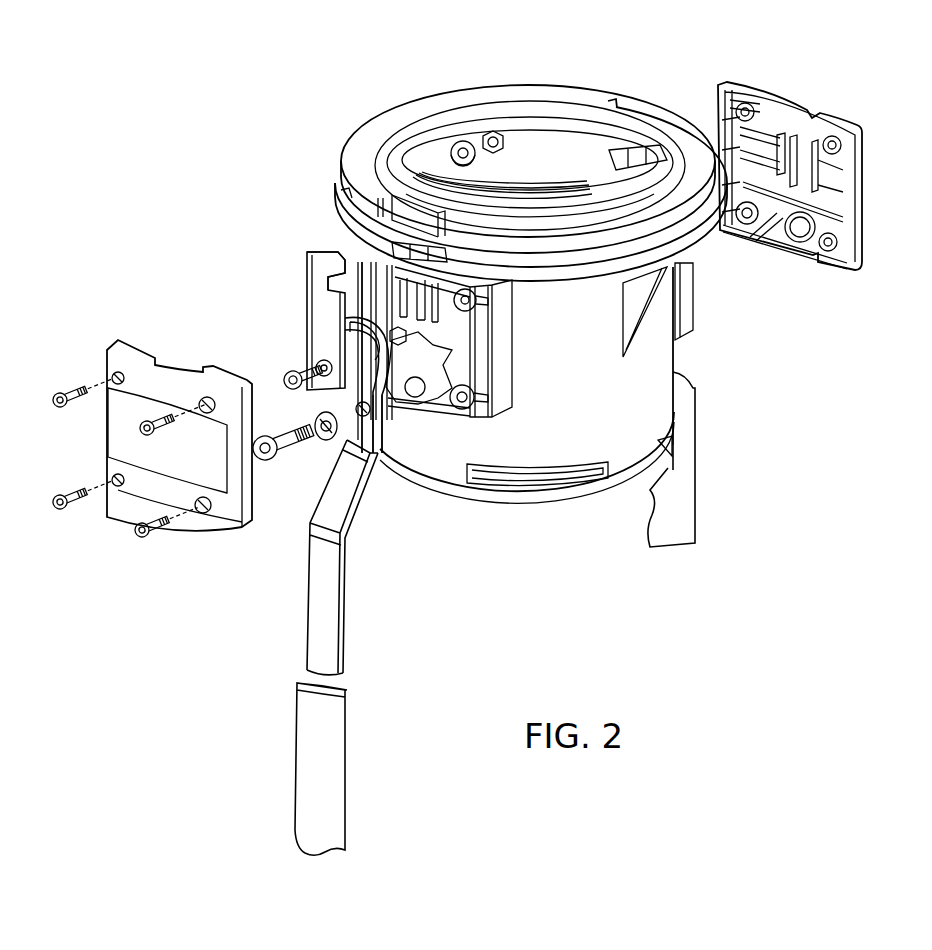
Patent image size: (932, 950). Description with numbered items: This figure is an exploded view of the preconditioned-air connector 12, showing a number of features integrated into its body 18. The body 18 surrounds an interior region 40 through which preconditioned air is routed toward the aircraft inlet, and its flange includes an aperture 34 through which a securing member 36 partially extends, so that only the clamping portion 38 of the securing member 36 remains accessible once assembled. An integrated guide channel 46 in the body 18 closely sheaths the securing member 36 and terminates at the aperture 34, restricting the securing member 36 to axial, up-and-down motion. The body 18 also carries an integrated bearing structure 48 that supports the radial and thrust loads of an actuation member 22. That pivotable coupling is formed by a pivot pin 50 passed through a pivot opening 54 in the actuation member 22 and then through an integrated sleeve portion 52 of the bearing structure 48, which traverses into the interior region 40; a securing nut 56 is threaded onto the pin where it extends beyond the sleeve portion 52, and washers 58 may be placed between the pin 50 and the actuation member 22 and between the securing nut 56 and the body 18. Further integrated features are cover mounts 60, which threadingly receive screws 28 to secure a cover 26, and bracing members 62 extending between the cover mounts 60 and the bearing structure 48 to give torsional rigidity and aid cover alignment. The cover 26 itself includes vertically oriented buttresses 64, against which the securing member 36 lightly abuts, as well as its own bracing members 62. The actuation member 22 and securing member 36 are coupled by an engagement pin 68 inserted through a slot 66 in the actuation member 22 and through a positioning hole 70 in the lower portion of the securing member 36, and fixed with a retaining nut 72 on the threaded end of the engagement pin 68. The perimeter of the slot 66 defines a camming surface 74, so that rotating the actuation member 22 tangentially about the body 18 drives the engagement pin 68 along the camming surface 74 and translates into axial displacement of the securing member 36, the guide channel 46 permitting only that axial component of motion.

The connector 12 is at (822, 322).
The body 18 is at (667, 360).
The actuating member 22 is at (690, 386).
The cover 26 is at (740, 98).
The screw 28 is at (60, 492).
The aperture 34 is at (430, 257).
The securing member 36 is at (315, 332).
The clamping portion 38 is at (318, 270).
The interior region 40 is at (540, 200).
The guide channel 46 is at (345, 202).
The integrated bearing structure 48 is at (433, 408).
The pivot pin 50 is at (288, 452).
The sleeve portion 52 is at (415, 397).
The pivot opening 54 is at (362, 417).
The securing nut 56 is at (496, 133).
The washer 58 is at (462, 142).
The cover mount 60 is at (720, 108).
The bracing member 62 is at (388, 313).
The buttress 64 is at (781, 135).
The slot 66 is at (380, 415).
The engagement pin 68 is at (290, 376).
The positioning hole 70 is at (325, 380).
The retaining nut 72 is at (365, 333).
The camming surface 74 is at (370, 355).